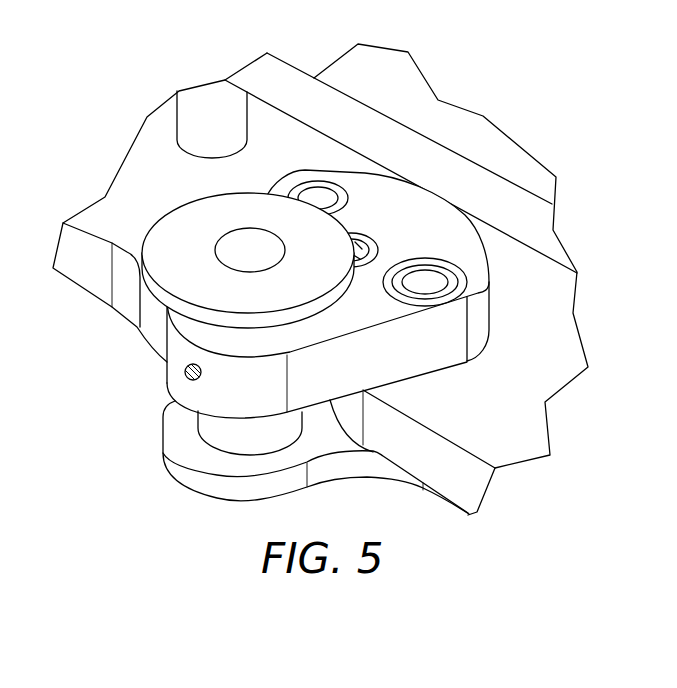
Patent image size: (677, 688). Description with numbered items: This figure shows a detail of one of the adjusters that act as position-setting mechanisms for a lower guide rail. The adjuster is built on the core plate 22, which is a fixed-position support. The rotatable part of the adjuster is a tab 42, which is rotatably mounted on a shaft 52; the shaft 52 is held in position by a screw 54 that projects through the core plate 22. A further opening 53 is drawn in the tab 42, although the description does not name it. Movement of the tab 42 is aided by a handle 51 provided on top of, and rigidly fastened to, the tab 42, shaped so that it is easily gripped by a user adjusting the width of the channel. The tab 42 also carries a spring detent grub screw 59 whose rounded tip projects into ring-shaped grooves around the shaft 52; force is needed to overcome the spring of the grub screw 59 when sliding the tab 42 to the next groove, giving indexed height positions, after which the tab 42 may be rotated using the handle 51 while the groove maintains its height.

The core plate 22 is at (182, 468).
The tab 42 is at (349, 294).
The handle 51 is at (185, 222).
The shaft 52 is at (250, 230).
The mounting hole 53 is at (440, 281).
The screw 54 is at (360, 247).
The spring detent grub screw 59 is at (183, 372).